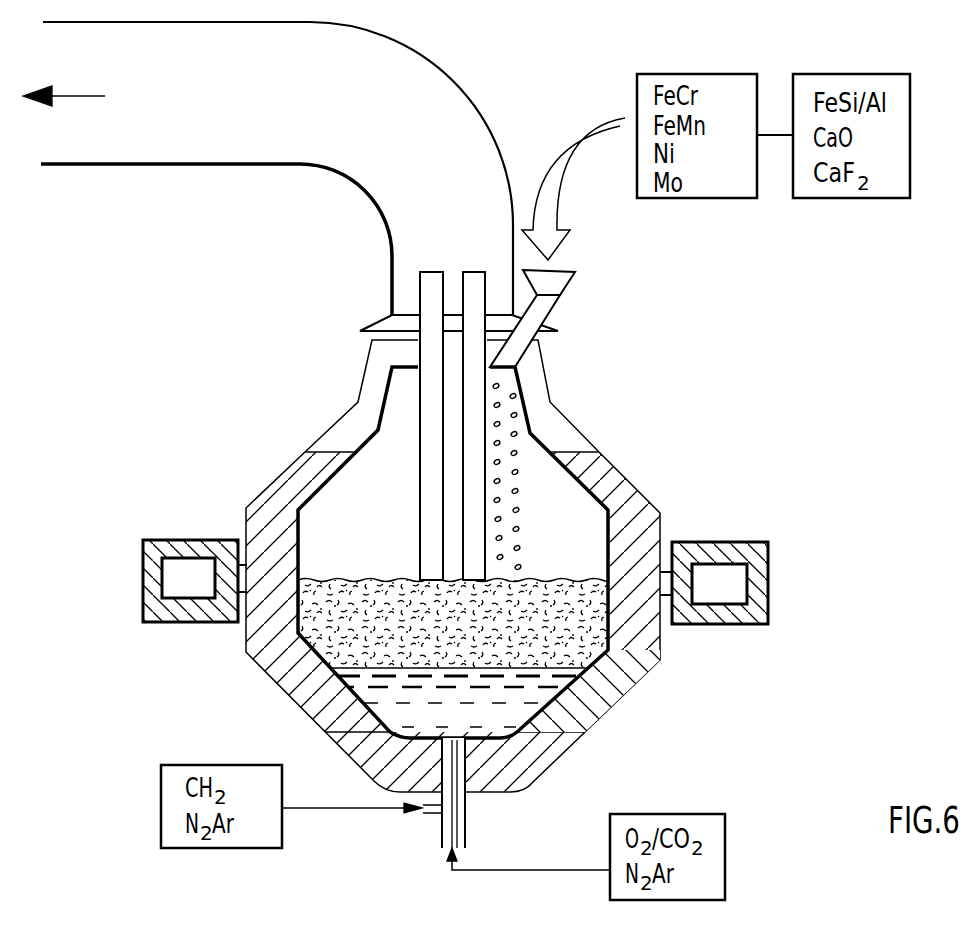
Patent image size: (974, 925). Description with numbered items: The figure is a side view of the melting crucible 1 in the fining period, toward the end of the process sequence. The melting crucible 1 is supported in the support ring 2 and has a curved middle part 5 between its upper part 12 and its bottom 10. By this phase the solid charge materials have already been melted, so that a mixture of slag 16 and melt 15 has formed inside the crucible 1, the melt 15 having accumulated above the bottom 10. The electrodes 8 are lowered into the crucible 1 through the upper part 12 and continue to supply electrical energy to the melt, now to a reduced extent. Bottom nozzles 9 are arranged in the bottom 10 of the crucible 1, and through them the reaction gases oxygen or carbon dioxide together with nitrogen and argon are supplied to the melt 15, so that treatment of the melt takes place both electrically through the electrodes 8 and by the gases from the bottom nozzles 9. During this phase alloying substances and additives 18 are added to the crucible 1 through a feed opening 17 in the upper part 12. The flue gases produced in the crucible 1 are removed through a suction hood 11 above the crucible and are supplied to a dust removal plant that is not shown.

The melting crucible 1 is at (630, 648).
The support ring 2 is at (755, 583).
The curved middle part 5 is at (607, 478).
The electrodes 8 is at (448, 378).
The bottom nozzles 9 is at (457, 827).
The bottom 10 is at (490, 763).
The suction hood 11 is at (447, 98).
The upper part 12 is at (532, 387).
The melt 15 is at (367, 690).
The slag 16 is at (358, 585).
The feed opening 17 is at (560, 283).
The alloying substances and additives 18 is at (553, 240).